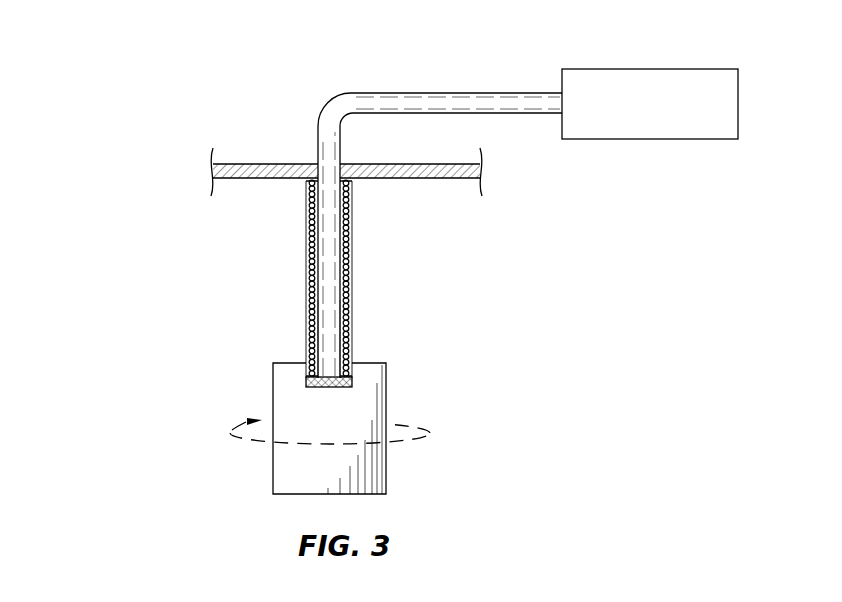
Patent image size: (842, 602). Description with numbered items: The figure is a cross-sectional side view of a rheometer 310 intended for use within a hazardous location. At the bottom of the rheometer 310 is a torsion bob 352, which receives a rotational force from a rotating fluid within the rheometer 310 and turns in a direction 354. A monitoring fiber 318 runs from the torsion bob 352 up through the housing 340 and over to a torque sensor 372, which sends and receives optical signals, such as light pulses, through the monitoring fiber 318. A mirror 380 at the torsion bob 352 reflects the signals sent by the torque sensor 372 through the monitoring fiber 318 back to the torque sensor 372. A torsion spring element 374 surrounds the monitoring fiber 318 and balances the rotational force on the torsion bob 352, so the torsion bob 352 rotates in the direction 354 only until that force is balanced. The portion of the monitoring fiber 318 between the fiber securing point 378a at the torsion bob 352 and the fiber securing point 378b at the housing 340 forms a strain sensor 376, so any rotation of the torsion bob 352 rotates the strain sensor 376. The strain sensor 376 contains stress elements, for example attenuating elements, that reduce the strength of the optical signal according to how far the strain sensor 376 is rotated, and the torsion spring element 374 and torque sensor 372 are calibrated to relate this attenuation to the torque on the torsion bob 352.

The rheometer 310 is at (155, 217).
The monitoring fiber 318 is at (458, 98).
The housing 340 is at (277, 163).
The torsion bob 352 is at (283, 462).
The direction 354 is at (428, 430).
The torque sensor 372 is at (672, 117).
The torsion spring element 374 is at (352, 219).
The strain sensor 376 is at (327, 277).
The fiber securing point 378a is at (345, 372).
The fiber securing point 378b is at (308, 188).
The mirror 380 is at (307, 382).